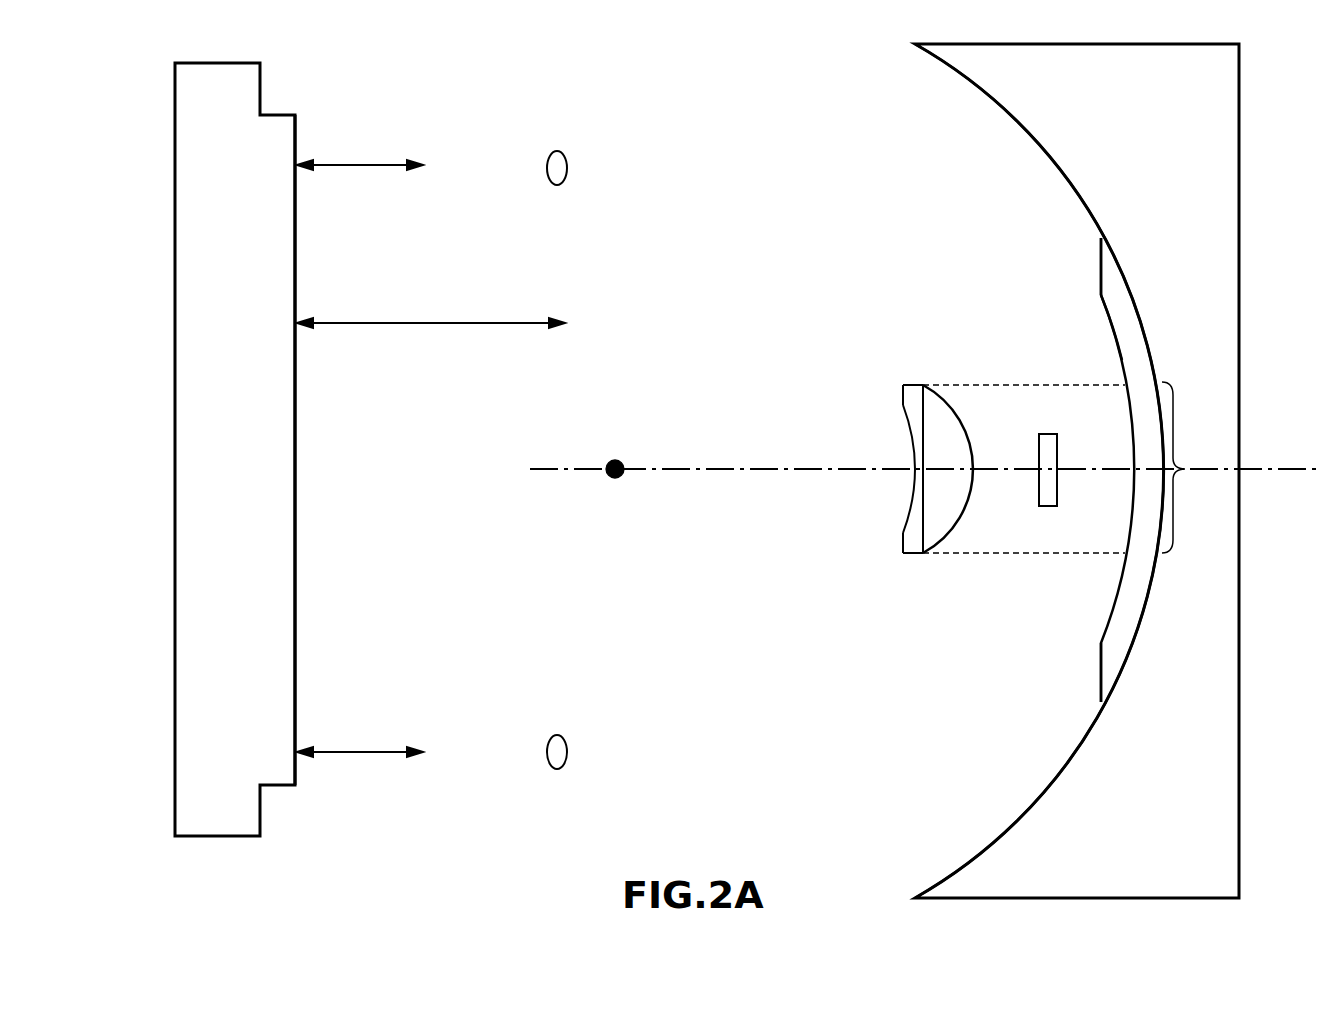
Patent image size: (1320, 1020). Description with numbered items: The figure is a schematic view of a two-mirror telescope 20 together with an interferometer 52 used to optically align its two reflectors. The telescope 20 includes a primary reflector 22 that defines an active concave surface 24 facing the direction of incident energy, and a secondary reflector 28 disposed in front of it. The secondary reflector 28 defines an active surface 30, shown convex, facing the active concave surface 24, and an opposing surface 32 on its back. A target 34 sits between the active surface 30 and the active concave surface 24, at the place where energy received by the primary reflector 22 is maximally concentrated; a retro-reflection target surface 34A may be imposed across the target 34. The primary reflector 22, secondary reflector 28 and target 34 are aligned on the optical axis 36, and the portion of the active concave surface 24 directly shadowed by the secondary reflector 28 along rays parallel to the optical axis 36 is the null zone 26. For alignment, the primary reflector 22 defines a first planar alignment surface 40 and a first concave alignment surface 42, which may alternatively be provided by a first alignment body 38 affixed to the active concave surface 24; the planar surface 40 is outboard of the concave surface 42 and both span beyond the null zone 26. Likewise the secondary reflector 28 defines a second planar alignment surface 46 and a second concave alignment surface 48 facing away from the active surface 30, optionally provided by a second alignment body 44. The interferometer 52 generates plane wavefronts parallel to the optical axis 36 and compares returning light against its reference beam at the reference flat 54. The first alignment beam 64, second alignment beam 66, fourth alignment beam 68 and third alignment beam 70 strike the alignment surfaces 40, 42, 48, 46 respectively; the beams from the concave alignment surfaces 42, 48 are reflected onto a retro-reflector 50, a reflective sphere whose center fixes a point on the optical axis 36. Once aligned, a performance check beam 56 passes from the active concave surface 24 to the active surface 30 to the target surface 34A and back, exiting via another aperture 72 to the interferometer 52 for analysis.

The telescope 20 is at (986, 471).
The primary reflector 22 is at (1240, 128).
The active concave surface 24 is at (993, 104).
The null zone 26 is at (1130, 469).
The secondary reflector 28 is at (935, 497).
The active surface 30 is at (955, 402).
The opposing surface 32 is at (921, 405).
The target 34 is at (1050, 457).
The retro-reflection target surface 34A is at (1040, 499).
The optical axis 36 is at (705, 471).
The first alignment body 38 is at (1107, 665).
The first planar alignment surface 40 is at (1101, 262).
The first concave alignment surface 42 is at (1112, 320).
The second alignment body 44 is at (910, 528).
The second planar alignment surface 46 is at (885, 465).
The second concave alignment surface 48 is at (913, 444).
The retro-reflector 50 is at (612, 478).
The interferometer 52 is at (175, 265).
The reference flat 54 is at (297, 572).
The performance check beam 56 is at (357, 167).
The first alignment beam 64 is at (431, 360).
The second alignment beam 66 is at (431, 360).
The fourth alignment beam 68 is at (431, 360).
The third alignment beam 70 is at (365, 325).
The aperture 72 is at (559, 185).